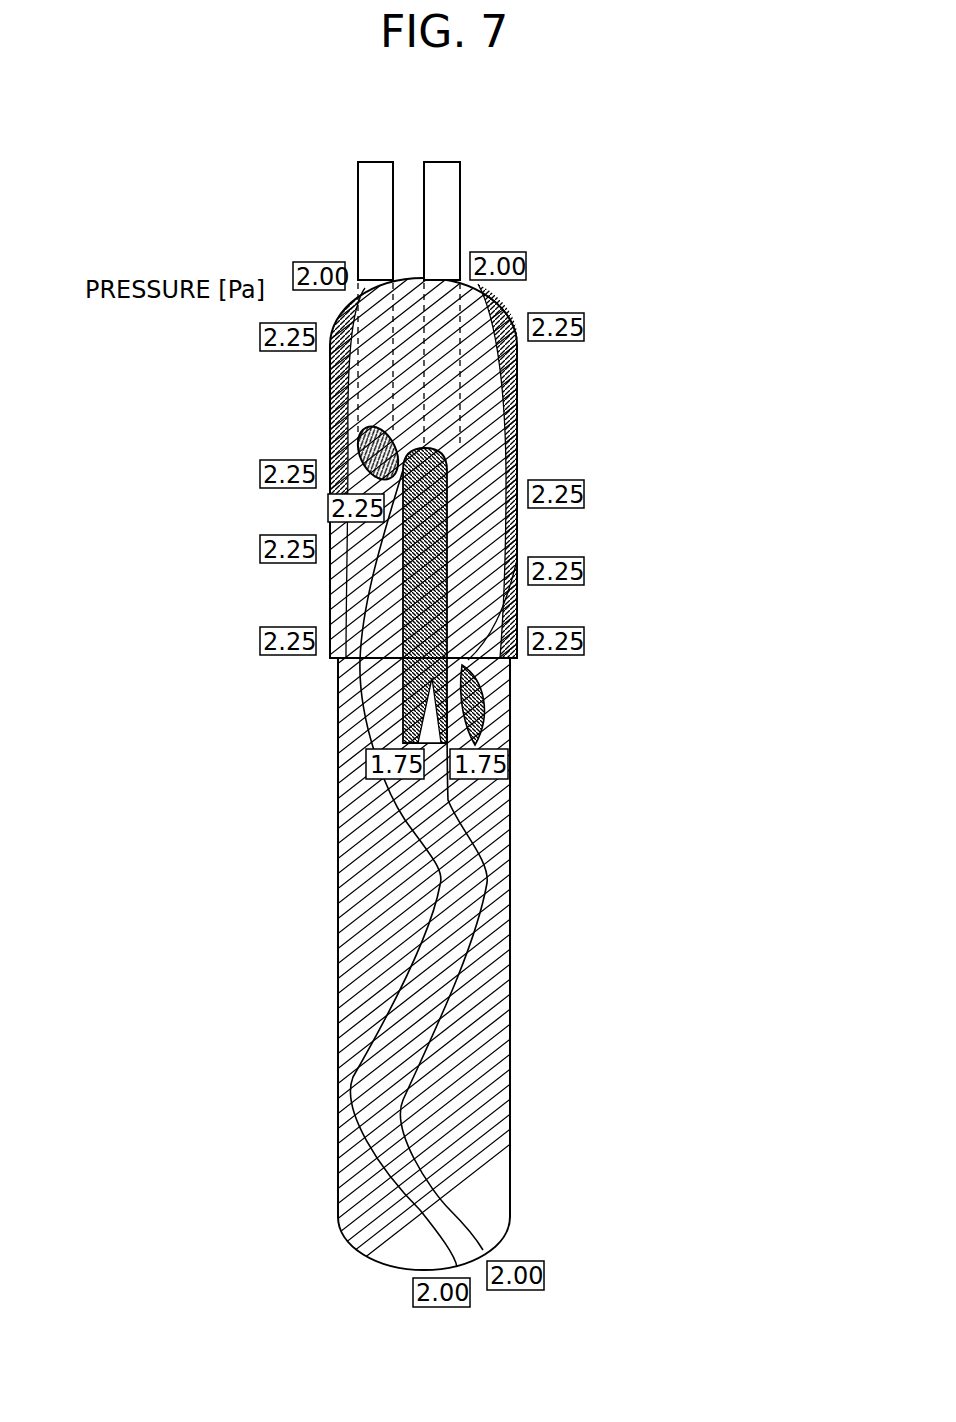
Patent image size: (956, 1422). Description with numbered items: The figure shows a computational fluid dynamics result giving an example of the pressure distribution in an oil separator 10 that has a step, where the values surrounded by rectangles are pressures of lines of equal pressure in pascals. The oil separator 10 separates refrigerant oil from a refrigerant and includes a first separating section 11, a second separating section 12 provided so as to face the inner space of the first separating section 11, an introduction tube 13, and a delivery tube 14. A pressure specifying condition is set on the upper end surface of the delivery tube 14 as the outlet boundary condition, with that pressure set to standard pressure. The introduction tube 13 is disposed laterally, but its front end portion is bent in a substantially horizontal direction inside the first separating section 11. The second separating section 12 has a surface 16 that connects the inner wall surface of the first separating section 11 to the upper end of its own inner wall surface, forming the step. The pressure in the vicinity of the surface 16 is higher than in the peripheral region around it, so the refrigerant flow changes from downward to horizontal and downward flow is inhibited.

The oil separator 10 is at (518, 153).
The first separating section 11 is at (520, 400).
The second separating section 12 is at (512, 797).
The introduction tube 13 is at (365, 206).
The delivery tube 14 is at (458, 203).
The surface 16 is at (512, 656).